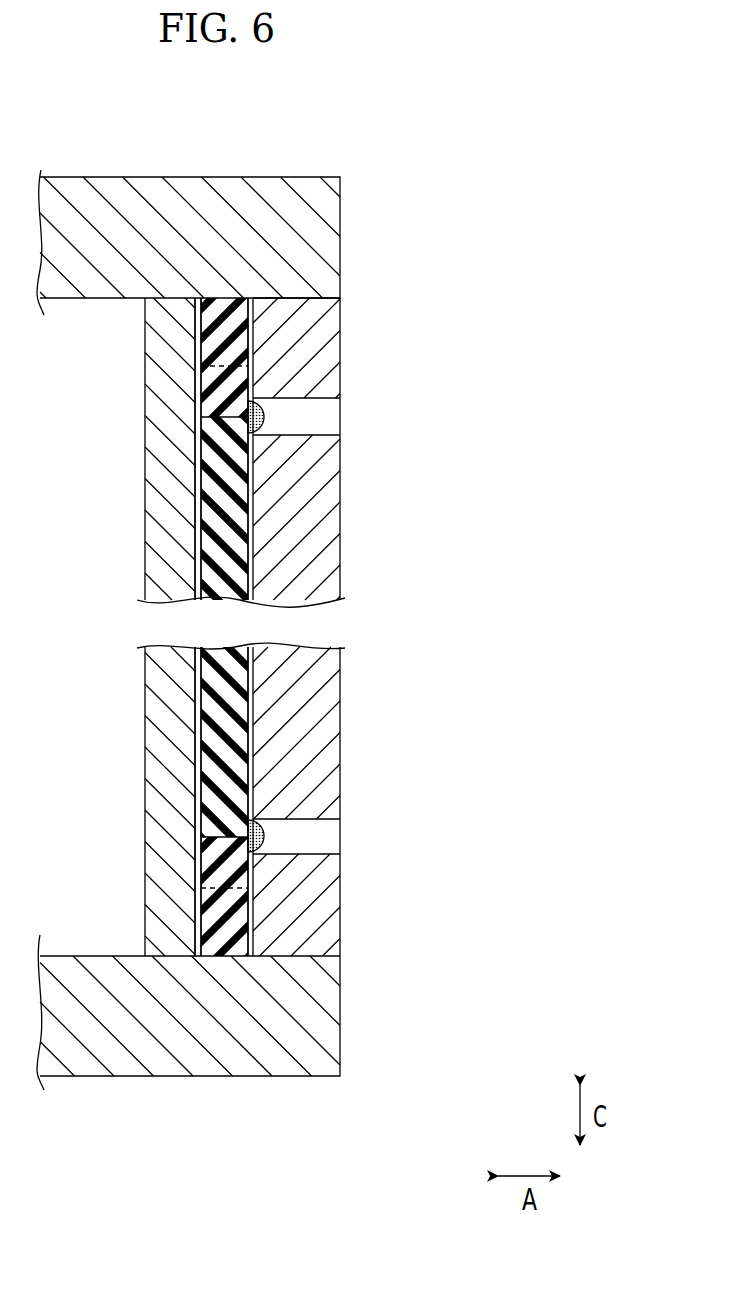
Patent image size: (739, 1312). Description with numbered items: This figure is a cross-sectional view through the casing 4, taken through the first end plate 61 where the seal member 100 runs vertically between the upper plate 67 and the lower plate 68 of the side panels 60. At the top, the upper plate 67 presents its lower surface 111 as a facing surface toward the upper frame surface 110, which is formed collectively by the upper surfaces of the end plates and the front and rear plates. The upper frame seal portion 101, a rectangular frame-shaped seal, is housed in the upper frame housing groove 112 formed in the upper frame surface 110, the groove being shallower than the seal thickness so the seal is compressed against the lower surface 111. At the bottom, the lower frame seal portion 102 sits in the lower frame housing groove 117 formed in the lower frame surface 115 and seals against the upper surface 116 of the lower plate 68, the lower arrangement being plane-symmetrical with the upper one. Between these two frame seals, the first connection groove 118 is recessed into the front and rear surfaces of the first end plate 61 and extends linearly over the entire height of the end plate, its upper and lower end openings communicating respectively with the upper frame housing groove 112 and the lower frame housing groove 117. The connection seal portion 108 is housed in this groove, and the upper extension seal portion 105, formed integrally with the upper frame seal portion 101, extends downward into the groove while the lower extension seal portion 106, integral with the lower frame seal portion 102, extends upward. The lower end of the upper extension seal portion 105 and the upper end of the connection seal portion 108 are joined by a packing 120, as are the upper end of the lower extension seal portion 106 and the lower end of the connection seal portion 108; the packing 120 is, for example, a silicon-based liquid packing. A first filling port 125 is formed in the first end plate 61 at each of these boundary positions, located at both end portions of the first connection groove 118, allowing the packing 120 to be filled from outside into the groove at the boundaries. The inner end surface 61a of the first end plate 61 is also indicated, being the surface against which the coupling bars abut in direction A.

The casing 4 is at (398, 164).
The side panels 60 is at (86, 170).
The first end plate 61 is at (346, 582).
The inner end surface 61a is at (123, 297).
The upper plate 67 is at (325, 238).
The lower plate 68 is at (325, 1045).
The seal member 100 is at (264, 380).
The upper frame seal portion 101 is at (245, 327).
The lower frame seal portion 102 is at (250, 925).
The upper extension seal portion 105 is at (207, 394).
The lower extension seal portion 106 is at (207, 862).
The connection seal portion 108 is at (240, 548).
The upper frame surface 110 is at (291, 297).
The lower surface 111 is at (300, 299).
The upper frame housing groove 112 is at (204, 349).
The lower frame surface 115 is at (330, 960).
The upper surface 116 is at (328, 951).
The lower frame housing groove 117 is at (205, 915).
The first connection groove 118 is at (203, 501).
The packing 120 is at (265, 414).
The first filling port 125 is at (340, 432).